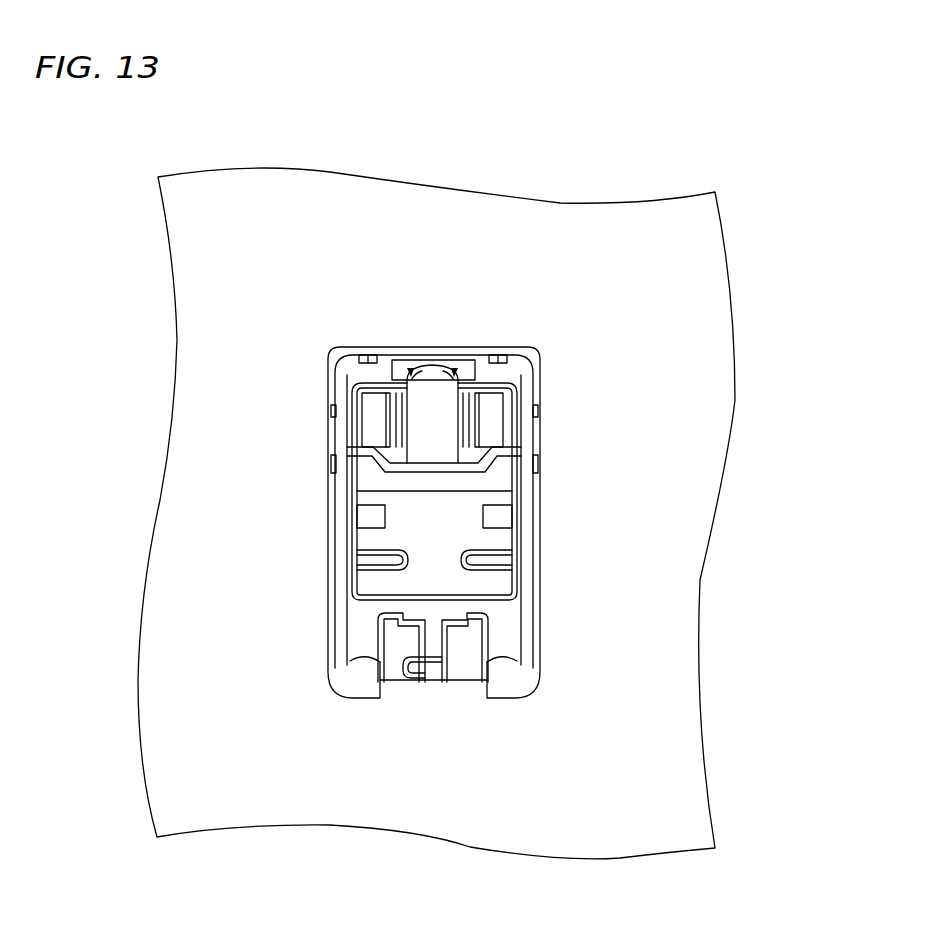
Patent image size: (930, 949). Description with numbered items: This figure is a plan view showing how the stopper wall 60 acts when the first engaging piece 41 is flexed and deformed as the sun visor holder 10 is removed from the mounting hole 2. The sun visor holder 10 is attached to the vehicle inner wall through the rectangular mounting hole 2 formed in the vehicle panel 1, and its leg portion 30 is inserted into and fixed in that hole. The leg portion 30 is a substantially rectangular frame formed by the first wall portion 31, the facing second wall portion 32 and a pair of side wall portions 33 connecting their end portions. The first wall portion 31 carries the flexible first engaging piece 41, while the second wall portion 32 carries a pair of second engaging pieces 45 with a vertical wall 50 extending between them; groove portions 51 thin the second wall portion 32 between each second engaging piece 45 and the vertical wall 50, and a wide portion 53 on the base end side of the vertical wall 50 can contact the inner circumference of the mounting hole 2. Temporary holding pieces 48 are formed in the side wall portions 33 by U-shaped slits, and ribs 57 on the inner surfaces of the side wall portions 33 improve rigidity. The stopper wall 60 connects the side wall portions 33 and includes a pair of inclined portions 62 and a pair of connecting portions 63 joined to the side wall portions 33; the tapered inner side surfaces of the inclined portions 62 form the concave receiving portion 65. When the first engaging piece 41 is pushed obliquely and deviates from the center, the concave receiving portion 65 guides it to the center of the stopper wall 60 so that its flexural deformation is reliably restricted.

The vehicle panel 1 is at (685, 617).
The mounting hole 2 is at (541, 578).
The sun visor holder 10 is at (435, 501).
The leg portion 30 is at (556, 387).
The first wall portion 31 is at (493, 385).
The second wall portion 32 is at (502, 610).
The side wall portion 33 is at (335, 558).
The first engaging piece 41 is at (437, 398).
The second engaging piece 45 is at (357, 680).
The temporary holding piece 48 is at (497, 515).
The vertical wall 50 is at (450, 637).
The groove portion 51 is at (383, 620).
The wide portion 53 is at (417, 672).
The rib 57 is at (382, 566).
The stopper wall 60 is at (386, 438).
The inclined portion 62 is at (380, 465).
The connecting portion 63 is at (360, 453).
The concave receiving portion 65 is at (448, 441).